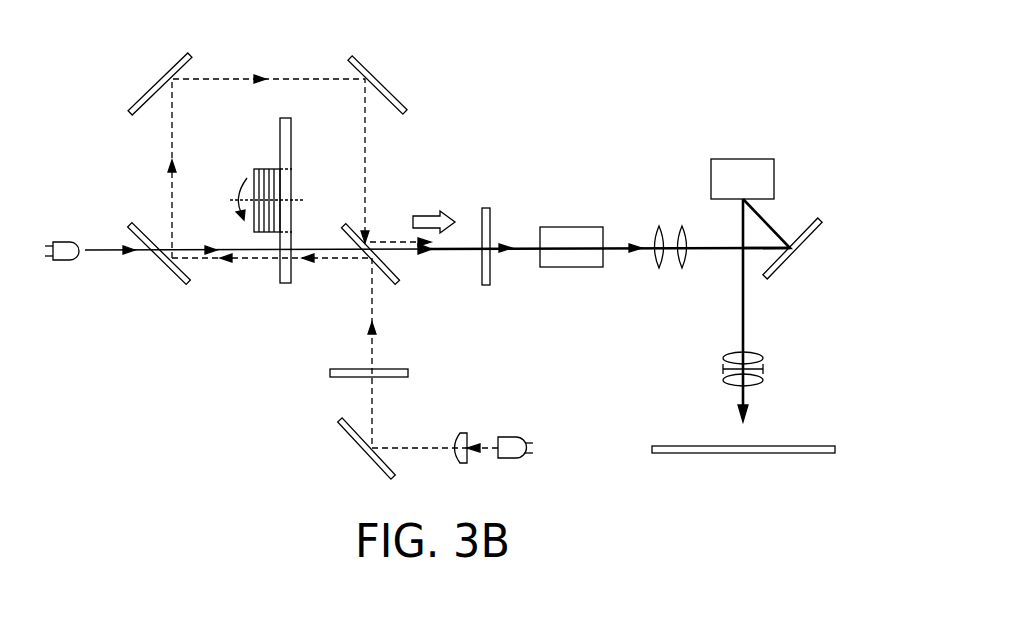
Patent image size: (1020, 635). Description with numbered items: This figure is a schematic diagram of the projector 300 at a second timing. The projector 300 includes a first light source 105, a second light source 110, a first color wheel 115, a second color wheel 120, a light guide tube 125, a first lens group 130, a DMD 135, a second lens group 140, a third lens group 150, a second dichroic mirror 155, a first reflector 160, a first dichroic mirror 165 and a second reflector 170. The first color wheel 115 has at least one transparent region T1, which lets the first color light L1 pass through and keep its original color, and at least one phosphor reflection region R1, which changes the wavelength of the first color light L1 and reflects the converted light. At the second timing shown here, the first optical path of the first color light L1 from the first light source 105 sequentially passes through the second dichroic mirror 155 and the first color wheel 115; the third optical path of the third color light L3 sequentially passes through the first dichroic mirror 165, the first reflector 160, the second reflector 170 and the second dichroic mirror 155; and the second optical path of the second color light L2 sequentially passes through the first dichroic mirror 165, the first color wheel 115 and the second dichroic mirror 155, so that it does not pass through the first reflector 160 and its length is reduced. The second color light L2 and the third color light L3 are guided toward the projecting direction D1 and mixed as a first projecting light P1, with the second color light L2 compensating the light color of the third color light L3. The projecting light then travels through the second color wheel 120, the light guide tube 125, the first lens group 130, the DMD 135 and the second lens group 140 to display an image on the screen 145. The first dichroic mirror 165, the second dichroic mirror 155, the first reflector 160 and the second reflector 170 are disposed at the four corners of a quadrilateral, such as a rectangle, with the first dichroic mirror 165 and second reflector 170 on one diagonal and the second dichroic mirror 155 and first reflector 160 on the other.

The projector 300 is at (530, 85).
The first light source 105 is at (512, 437).
The second light source 110 is at (57, 240).
The first color wheel 115 is at (291, 118).
The second color wheel 120 is at (486, 208).
The light guide tube 125 is at (572, 227).
The first lens group 130 is at (765, 278).
The DMD 135 is at (745, 159).
The second lens group 140 is at (763, 358).
The screen 145 is at (813, 446).
The third lens group 150 is at (460, 463).
The second dichroic mirror 155 is at (399, 283).
The first reflector 160 is at (190, 55).
The first dichroic mirror 165 is at (177, 285).
The second reflector 170 is at (403, 101).
The first color light L1 is at (355, 265).
The second color light L2 is at (462, 330).
The third color light L3 is at (248, 262).
The projecting direction D1 is at (433, 211).
The first projecting light P1 is at (447, 255).
The phosphor reflection region R1 is at (293, 150).
The transparent region T1 is at (292, 283).